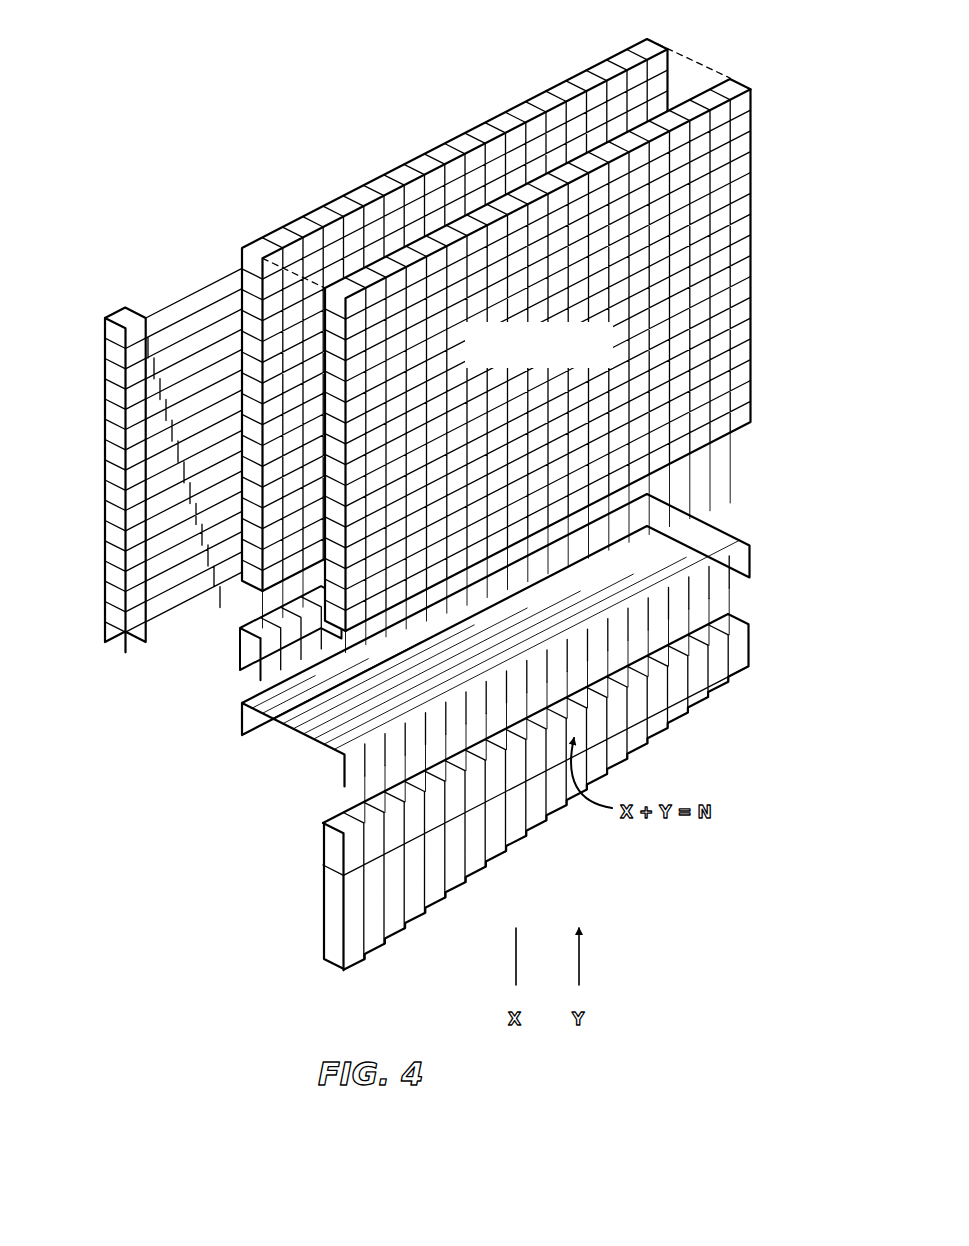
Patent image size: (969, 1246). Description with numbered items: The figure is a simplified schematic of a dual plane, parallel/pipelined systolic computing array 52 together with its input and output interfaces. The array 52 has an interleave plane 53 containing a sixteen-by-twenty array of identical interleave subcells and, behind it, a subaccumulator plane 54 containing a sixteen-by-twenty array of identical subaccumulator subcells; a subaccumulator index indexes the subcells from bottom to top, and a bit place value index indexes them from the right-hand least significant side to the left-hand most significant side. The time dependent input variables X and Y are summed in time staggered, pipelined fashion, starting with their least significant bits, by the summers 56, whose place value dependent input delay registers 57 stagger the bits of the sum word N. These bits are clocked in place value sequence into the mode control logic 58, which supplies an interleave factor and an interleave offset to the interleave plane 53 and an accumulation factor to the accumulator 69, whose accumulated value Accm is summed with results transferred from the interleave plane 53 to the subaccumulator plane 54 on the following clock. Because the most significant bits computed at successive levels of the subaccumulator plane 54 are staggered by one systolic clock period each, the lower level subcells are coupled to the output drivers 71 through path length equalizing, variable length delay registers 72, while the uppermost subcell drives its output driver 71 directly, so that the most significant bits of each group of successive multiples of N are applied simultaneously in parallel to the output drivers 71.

The systolic computing array 52 is at (698, 48).
The interleave plane 53 is at (786, 169).
The subaccumulator plane 54 is at (150, 688).
The input summers 56 is at (752, 649).
The place value dependent input delay registers 57 is at (720, 692).
The mode control logic 58 is at (756, 540).
The accumulator 69 is at (250, 662).
The output drivers 71 is at (118, 318).
The variable length delay registers 72 is at (152, 343).